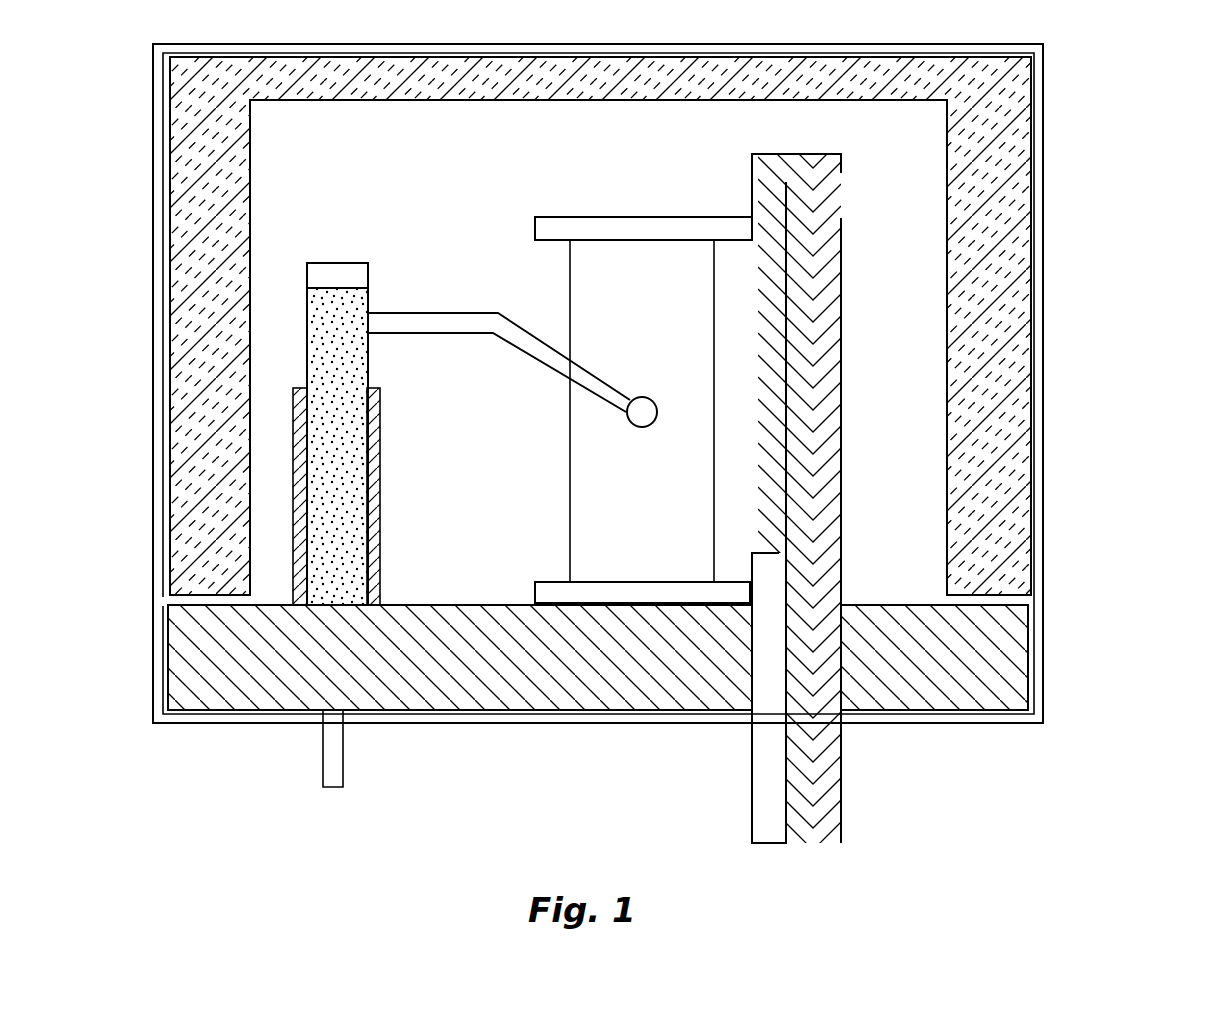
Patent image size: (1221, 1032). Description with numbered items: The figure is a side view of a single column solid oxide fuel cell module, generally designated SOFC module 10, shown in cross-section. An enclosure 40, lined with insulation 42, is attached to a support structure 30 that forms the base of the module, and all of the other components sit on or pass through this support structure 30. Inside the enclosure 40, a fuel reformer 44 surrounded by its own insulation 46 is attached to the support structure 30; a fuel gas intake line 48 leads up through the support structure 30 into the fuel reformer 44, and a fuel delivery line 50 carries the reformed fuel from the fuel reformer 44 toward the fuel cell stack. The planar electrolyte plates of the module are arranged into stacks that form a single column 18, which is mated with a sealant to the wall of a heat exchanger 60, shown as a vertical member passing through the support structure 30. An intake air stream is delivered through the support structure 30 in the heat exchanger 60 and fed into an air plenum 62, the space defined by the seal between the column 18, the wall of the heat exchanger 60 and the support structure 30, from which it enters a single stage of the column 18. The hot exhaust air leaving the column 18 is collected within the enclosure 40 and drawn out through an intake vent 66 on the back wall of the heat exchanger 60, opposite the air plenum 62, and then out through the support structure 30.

The SOFC module 10 is at (651, 469).
The single column 18 is at (514, 212).
The support structure 30 is at (162, 624).
The enclosure 40 is at (1042, 443).
The insulation 42 is at (248, 123).
The fuel reformer 44 is at (335, 263).
The insulation 46 is at (295, 412).
The fuel gas intake line 48 is at (345, 750).
The fuel delivery line 50 is at (415, 333).
The heat exchanger 60 is at (837, 503).
The air plenum 62 is at (749, 394).
The intake vent 66 is at (833, 243).